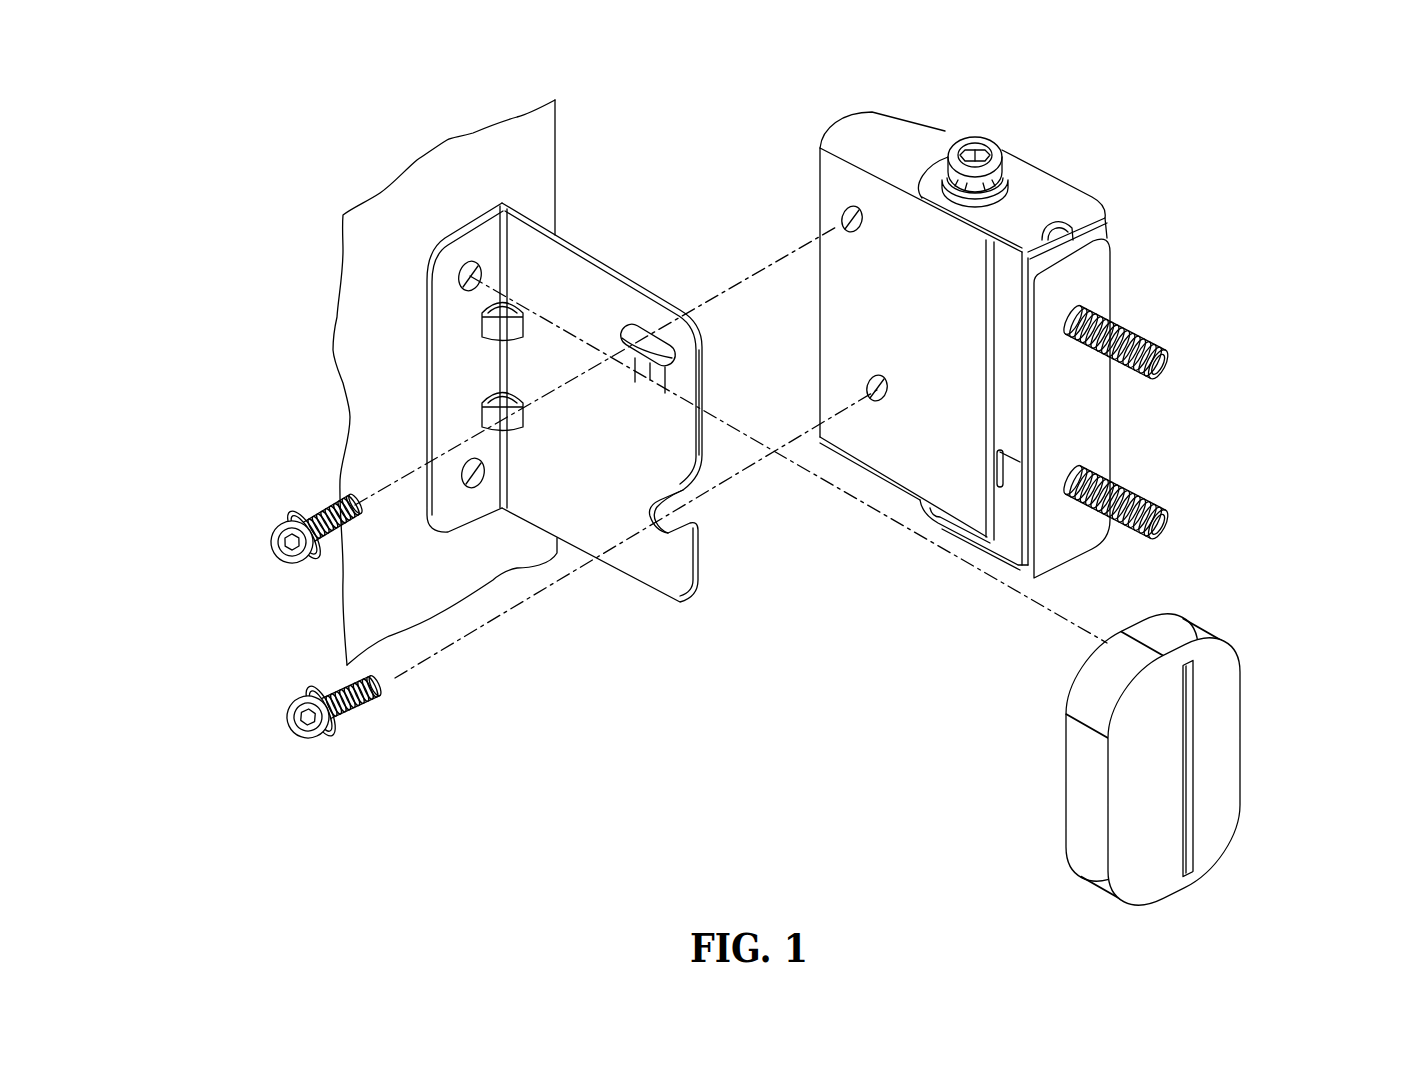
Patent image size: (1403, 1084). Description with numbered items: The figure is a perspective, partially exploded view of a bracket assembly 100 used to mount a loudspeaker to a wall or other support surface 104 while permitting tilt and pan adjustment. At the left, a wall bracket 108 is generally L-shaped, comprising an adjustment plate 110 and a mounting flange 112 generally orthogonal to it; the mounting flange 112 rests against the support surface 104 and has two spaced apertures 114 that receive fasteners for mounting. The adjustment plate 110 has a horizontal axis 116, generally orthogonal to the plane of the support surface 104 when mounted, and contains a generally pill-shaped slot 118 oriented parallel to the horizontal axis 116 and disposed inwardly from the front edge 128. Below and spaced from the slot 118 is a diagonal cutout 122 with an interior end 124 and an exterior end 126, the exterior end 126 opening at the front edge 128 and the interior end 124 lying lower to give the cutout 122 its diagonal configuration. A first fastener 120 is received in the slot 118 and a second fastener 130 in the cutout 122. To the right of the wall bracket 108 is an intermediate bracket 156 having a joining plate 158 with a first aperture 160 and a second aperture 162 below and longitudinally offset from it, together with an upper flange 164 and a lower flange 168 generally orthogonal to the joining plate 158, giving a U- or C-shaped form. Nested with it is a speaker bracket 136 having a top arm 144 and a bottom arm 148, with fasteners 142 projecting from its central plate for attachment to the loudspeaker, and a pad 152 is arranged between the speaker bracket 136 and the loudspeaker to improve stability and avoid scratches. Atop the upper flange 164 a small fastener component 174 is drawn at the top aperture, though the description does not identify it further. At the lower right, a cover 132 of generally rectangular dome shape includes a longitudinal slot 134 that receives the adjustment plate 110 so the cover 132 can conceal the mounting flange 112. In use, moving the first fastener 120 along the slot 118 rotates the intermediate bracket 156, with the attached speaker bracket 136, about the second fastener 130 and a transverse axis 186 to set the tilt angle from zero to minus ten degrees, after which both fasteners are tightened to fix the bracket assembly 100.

The bracket assembly 100 is at (330, 116).
The support surface 104 is at (545, 143).
The wall bracket 108 is at (671, 610).
The adjustment plate 110 is at (596, 282).
The mounting flange 112 is at (466, 378).
The aperture 114 is at (462, 282).
The horizontal axis 116 is at (963, 568).
The slot 118 is at (648, 332).
The first fastener 120 is at (277, 513).
The cutout 122 is at (662, 538).
The interior end 124 is at (652, 518).
The exterior end 126 is at (692, 516).
The front edge 128 is at (703, 389).
The second fastener 130 is at (306, 692).
The cover 132 is at (1052, 836).
The longitudinal slot 134 is at (1188, 773).
The speaker bracket 136 is at (1097, 186).
The fastener 142 is at (1158, 340).
The top arm 144 is at (1048, 190).
The bottom arm 148 is at (950, 528).
The pad 152 is at (1100, 267).
The intermediate bracket 156 is at (880, 114).
The joining plate 158 is at (930, 465).
The first aperture 160 is at (843, 216).
The second aperture 162 is at (868, 390).
The upper flange 164 is at (934, 133).
The lower flange 168 is at (1018, 513).
The lock washer 174 is at (980, 142).
The transverse axis 186 is at (433, 656).